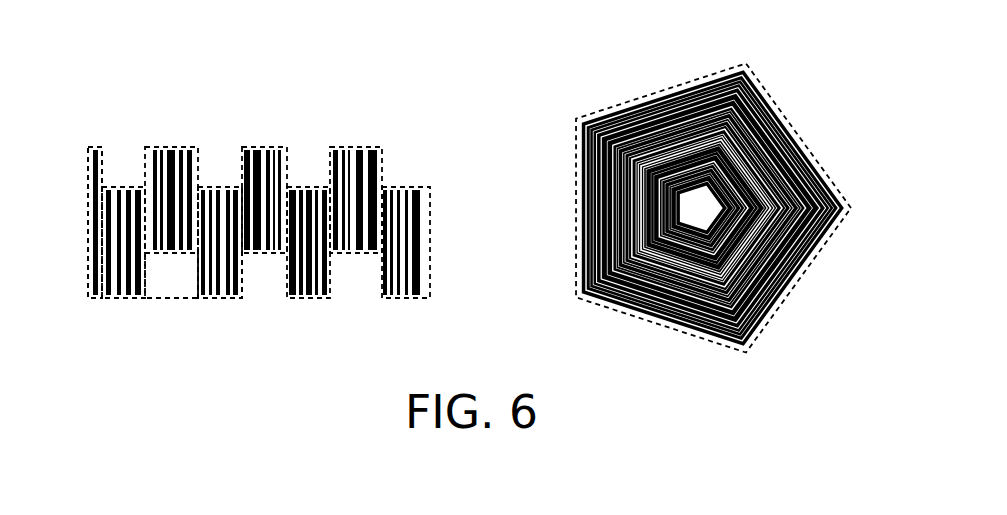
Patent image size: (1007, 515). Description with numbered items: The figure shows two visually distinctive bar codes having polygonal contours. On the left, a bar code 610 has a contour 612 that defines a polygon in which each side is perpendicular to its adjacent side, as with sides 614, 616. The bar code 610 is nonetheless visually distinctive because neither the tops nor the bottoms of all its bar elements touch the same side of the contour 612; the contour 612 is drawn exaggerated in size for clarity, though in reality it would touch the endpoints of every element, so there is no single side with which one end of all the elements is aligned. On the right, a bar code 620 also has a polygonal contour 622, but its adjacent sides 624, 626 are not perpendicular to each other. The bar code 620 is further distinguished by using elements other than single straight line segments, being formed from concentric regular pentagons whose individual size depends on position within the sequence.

The bar code 610 is at (96, 134).
The contour 612 is at (100, 302).
The side of contour 614 is at (195, 274).
The adjacent side of contour 616 is at (208, 302).
The bar code 620 is at (556, 132).
The contour 622 is at (748, 53).
The side of contour 624 is at (797, 130).
The adjacent side of contour 626 is at (803, 270).